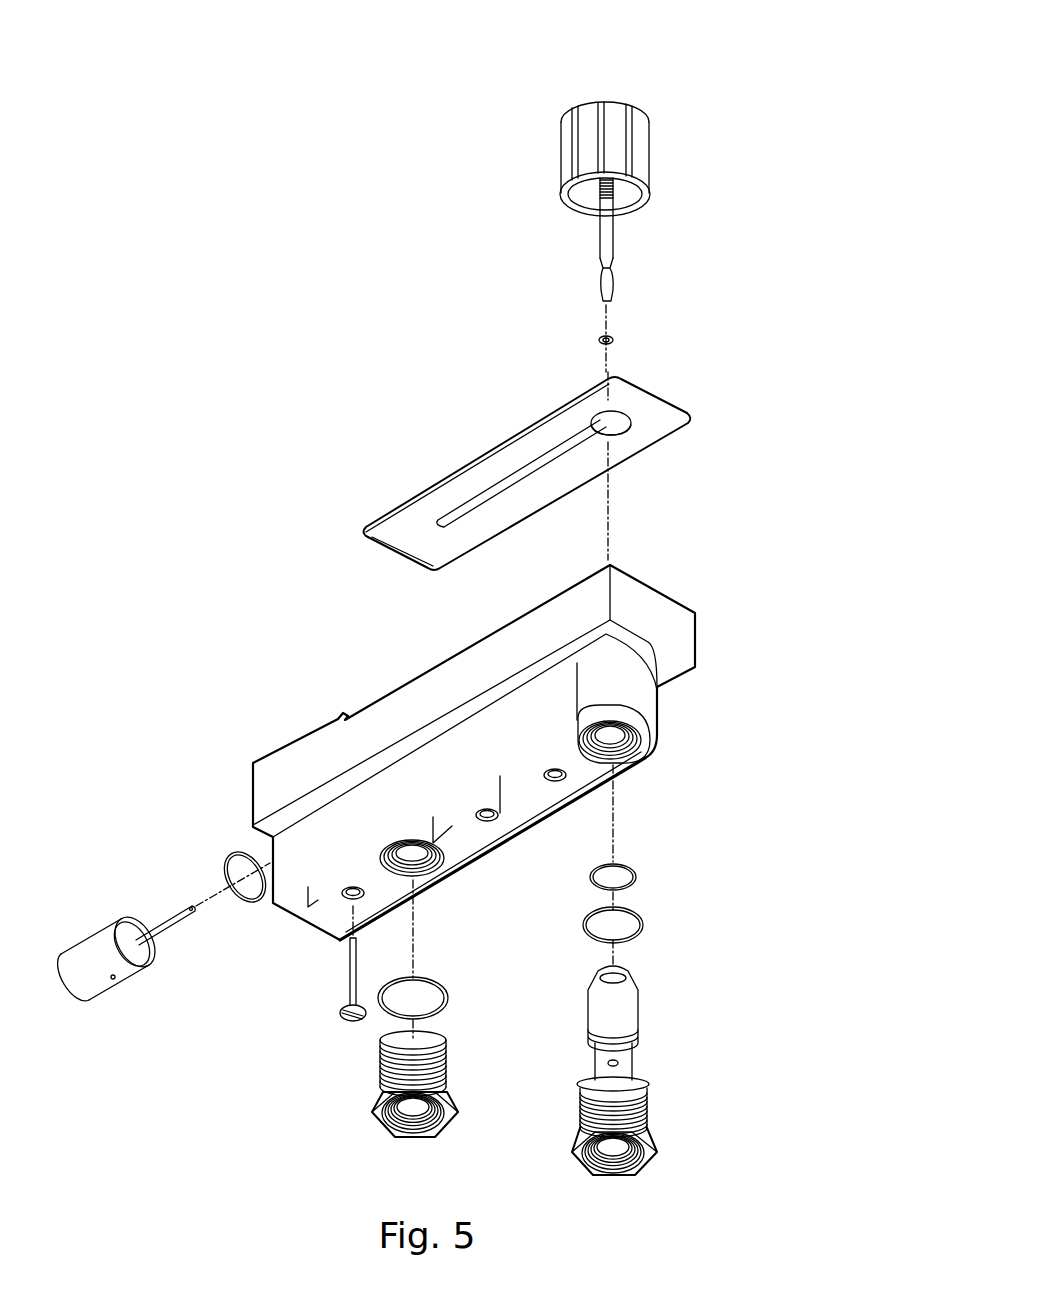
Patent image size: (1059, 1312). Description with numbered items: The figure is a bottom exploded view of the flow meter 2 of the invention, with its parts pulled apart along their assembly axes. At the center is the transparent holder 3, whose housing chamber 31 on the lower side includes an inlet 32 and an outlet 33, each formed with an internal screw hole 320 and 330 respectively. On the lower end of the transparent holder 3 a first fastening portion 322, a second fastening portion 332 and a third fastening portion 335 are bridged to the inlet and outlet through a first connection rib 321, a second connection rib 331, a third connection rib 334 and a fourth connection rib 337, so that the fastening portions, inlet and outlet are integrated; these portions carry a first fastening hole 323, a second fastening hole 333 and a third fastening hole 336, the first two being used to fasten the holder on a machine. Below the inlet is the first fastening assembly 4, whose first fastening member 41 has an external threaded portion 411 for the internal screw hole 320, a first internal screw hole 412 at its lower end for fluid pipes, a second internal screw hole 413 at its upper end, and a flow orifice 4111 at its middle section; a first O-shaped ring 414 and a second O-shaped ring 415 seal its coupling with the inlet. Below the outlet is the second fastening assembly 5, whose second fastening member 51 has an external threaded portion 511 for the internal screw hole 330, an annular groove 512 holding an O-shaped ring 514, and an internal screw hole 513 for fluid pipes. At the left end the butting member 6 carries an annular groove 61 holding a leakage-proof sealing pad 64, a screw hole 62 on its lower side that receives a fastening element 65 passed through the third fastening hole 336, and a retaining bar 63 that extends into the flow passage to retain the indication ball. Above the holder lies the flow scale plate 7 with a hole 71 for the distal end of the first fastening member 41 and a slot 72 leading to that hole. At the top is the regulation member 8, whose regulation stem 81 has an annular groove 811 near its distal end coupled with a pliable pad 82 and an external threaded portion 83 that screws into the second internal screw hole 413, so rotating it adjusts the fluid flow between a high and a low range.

The flow meter 2 is at (378, 403).
The transparent holder 3 is at (668, 636).
The housing chamber 31 is at (530, 808).
The inlet 32 is at (650, 766).
The internal screw hole 320 is at (624, 744).
The first connection rib 321 is at (548, 760).
The first fastening portion 322 is at (473, 803).
The first fastening hole 323 is at (552, 793).
The outlet 33 is at (417, 897).
The internal screw hole 330 is at (403, 866).
The second connection rib 331 is at (437, 820).
The second fastening portion 332 is at (452, 820).
The second fastening hole 333 is at (488, 826).
The third connection rib 334 is at (358, 862).
The third fastening portion 335 is at (343, 873).
The third fastening hole 336 is at (352, 903).
The fourth connection rib 337 is at (308, 909).
The first fastening assembly 4 is at (713, 877).
The first fastening member 41 is at (620, 1075).
The external threaded portion 411 is at (650, 1111).
The flow orifice 4111 is at (620, 1065).
The first internal screw hole 412 is at (625, 1159).
The second internal screw hole 413 is at (627, 977).
The first O-shaped ring 414 is at (645, 929).
The second O-shaped ring 415 is at (637, 881).
The second fastening assembly 5 is at (505, 1000).
The second fastening member 51 is at (399, 1100).
The external threaded portion 511 is at (380, 1056).
The annular groove 512 is at (453, 1091).
The internal screw hole 513 is at (408, 1119).
The O-shaped ring 514 is at (449, 1000).
The butting member 6 is at (103, 910).
The annular groove 61 is at (137, 976).
The screw hole 62 is at (113, 981).
The retaining bar 63 is at (168, 929).
The leakage-proof sealing pad 64 is at (243, 856).
The fastening element 65 is at (357, 976).
The flow scale plate 7 is at (527, 468).
The hole 71 is at (592, 424).
The slot 72 is at (520, 481).
The regulation member 8 is at (648, 101).
The regulation stem 81 is at (609, 245).
The annular groove 811 is at (600, 258).
The pliable pad 82 is at (614, 341).
The external threaded portion 83 is at (615, 192).